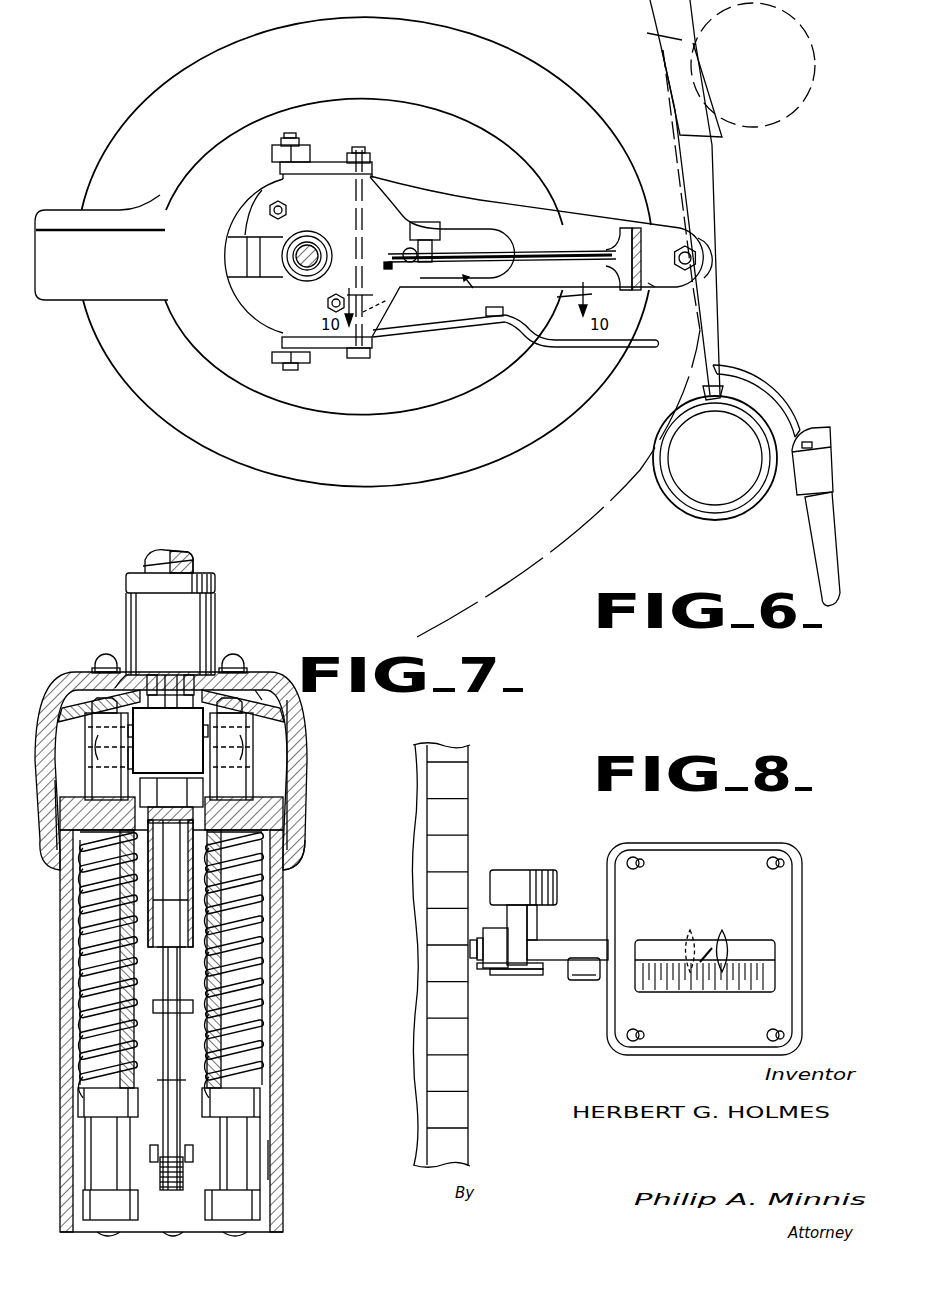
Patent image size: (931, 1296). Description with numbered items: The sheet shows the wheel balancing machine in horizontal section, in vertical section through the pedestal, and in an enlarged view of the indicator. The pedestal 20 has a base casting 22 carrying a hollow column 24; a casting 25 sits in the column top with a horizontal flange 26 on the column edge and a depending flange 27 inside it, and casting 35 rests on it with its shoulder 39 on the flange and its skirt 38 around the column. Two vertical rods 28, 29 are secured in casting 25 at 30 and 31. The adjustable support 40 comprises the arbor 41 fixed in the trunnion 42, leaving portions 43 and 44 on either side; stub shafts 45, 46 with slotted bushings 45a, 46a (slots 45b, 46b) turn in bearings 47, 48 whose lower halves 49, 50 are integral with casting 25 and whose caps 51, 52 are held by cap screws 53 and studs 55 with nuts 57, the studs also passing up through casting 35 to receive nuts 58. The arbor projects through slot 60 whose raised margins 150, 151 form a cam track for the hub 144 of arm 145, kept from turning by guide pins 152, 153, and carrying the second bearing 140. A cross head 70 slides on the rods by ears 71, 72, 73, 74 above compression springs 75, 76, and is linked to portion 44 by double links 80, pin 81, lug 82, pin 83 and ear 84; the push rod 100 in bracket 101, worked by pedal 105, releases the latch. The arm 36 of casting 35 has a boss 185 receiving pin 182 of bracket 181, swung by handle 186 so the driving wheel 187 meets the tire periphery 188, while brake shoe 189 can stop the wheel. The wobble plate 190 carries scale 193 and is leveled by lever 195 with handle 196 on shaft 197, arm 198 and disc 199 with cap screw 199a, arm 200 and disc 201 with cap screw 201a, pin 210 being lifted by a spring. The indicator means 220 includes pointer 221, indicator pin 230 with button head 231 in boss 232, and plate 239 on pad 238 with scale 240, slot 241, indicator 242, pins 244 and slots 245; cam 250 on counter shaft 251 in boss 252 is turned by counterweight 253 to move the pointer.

In FIG. 6, the pedestal 20 is at (153, 411).
In FIG. 7, the pedestal 20 is at (282, 1160).
In FIG. 6, the base casting 22 is at (533, 433).
In FIG. 7, the hollow column 24 is at (283, 1066).
In FIG. 7, the casting 25 is at (251, 781).
In FIG. 7, the horizontal flange 26 is at (281, 805).
In FIG. 7, the vertical depending flange 27 is at (270, 823).
In FIG. 7, the vertical rod 28 is at (95, 985).
In FIG. 7, the vertical rod 29 is at (246, 985).
In FIG. 7, the upper end securing point of rod 28 30 is at (110, 831).
In FIG. 7, the upper end securing point of rod 29 31 is at (240, 840).
In FIG. 6, the casting 35 is at (272, 316).
In FIG. 7, the casting 35 is at (300, 780).
In FIG. 6, the laterally extending arm 36 is at (578, 222).
In FIG. 7, the skirt 38 is at (295, 852).
In FIG. 7, the shoulder 39 is at (80, 800).
In FIG. 7, the adjustable support 40 is at (290, 705).
In FIG. 6, the arbor 41 is at (300, 268).
In FIG. 7, the arbor 41 is at (171, 700).
In FIG. 7, the trunnion 42 is at (168, 740).
In FIG. 7, the arbor portion 43 is at (185, 701).
In FIG. 7, the arbor portion 44 is at (106, 832).
In FIG. 7, the stub shaft 45 is at (95, 746).
In FIG. 7, the bushing 45a is at (98, 735).
In FIG. 7, the slot 45b is at (95, 760).
In FIG. 7, the stub shaft 46 is at (246, 746).
In FIG. 7, the bushing 46a is at (286, 726).
In FIG. 7, the slot 46b is at (286, 741).
In FIG. 7, the bearing 47 is at (131, 751).
In FIG. 7, the bearing 48 is at (207, 735).
In FIG. 7, the lower bearing half 49 is at (106, 756).
In FIG. 7, the lower bearing half 50 is at (231, 756).
In FIG. 7, the bearing cap 51 is at (145, 721).
In FIG. 7, the bearing cap 52 is at (243, 716).
In FIG. 7, the cap screw 53 is at (255, 700).
In FIG. 7, the stud 55 is at (90, 689).
In FIG. 7, the nut 57 is at (113, 712).
In FIG. 6, the nut 58 is at (286, 207).
In FIG. 7, the nut 58 is at (105, 655).
In FIG. 6, the slot 60 is at (256, 270).
In FIG. 7, the slot 60 is at (128, 672).
In FIG. 7, the cross head 70 is at (256, 1150).
In FIG. 7, the ear 71 is at (92, 1100).
In FIG. 7, the ear 72 is at (95, 1205).
In FIG. 7, the ear 73 is at (262, 1100).
In FIG. 7, the ear 74 is at (260, 1205).
In FIG. 7, the compression spring 75 is at (80, 1036).
In FIG. 7, the compression spring 76 is at (256, 1010).
In FIG. 7, the double links 80 is at (160, 992).
In FIG. 7, the pin 81 is at (190, 836).
In FIG. 7, the lug 82 is at (165, 850).
In FIG. 7, the pin 83 is at (152, 1153).
In FIG. 7, the ear 84 is at (177, 1142).
In FIG. 7, the push rod 100 is at (163, 963).
In FIG. 7, the bracket 101 is at (162, 1072).
In FIG. 6, the pedal 105 is at (47, 302).
In FIG. 6, the second bearing 140 is at (319, 243).
In FIG. 7, the second bearing 140 is at (215, 578).
In FIG. 6, the hub 144 is at (305, 231).
In FIG. 7, the hub 144 is at (215, 613).
In FIG. 6, the arm 145 is at (372, 258).
In FIG. 8, the arm 145 is at (562, 946).
In FIG. 6, the slot margin 150 is at (253, 235).
In FIG. 6, the slot margin 151 is at (255, 287).
In FIG. 7, the guide pin 152 is at (151, 674).
In FIG. 7, the guide pin 153 is at (192, 674).
In FIG. 6, the bracket 181 is at (710, 333).
In FIG. 6, the pin 182 is at (700, 259).
In FIG. 6, the apertured boss 185 is at (703, 252).
In FIG. 6, the handle 186 is at (812, 523).
In FIG. 6, the driving wheel 187 is at (682, 508).
In FIG. 6, the periphery of the tire 188 is at (585, 533).
In FIG. 6, the brake shoe 189 is at (765, 385).
In FIG. 8, the wobble plate 190 is at (413, 858).
In FIG. 8, the scale 193 is at (428, 944).
In FIG. 6, the lever 195 is at (497, 330).
In FIG. 6, the handle 196 is at (655, 350).
In FIG. 6, the shaft 197 is at (376, 298).
In FIG. 6, the upwardly inclined arm 198 is at (331, 349).
In FIG. 6, the disc or button 199 is at (278, 364).
In FIG. 6, the cap screw 199a is at (291, 371).
In FIG. 6, the arm 200 is at (330, 162).
In FIG. 6, the disc or button 201 is at (305, 146).
In FIG. 6, the cap screw 201a is at (275, 142).
In FIG. 6, the pin 210 is at (498, 309).
In FIG. 6, the indicator means 220 is at (467, 291).
In FIG. 8, the indicator means 220 is at (525, 1006).
In FIG. 6, the pointer 221 is at (522, 253).
In FIG. 8, the pointer 221 is at (706, 952).
In FIG. 8, the indicator pin 230 is at (481, 968).
In FIG. 8, the button head 231 is at (473, 968).
In FIG. 8, the boss 232 is at (495, 968).
In FIG. 6, the pad 238 is at (627, 240).
In FIG. 8, the pad 238 is at (690, 845).
In FIG. 6, the plate 239 is at (651, 250).
In FIG. 8, the plate 239 is at (750, 850).
In FIG. 8, the scale 240 is at (778, 968).
In FIG. 8, the slot 241 is at (655, 958).
In FIG. 6, the indicator 242 is at (655, 292).
In FIG. 8, the indicator 242 is at (724, 938).
In FIG. 8, the pin 244 is at (631, 857).
In FIG. 8, the slot 245 is at (641, 859).
In FIG. 8, the cam 250 is at (532, 970).
In FIG. 8, the counter shaft 251 is at (526, 976).
In FIG. 8, the boss 252 is at (540, 921).
In FIG. 8, the counterweight 253 is at (524, 870).